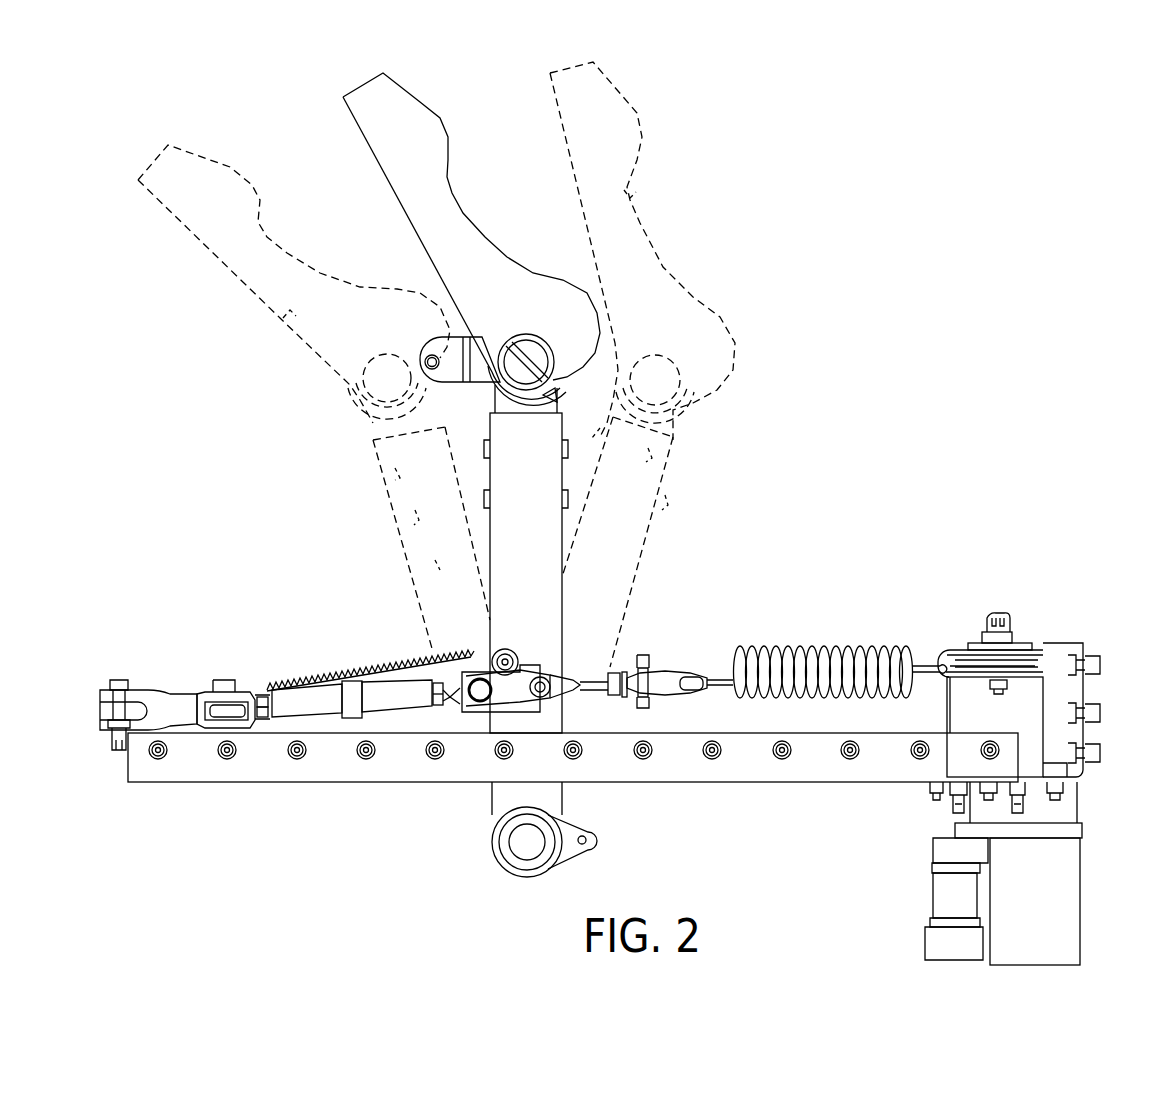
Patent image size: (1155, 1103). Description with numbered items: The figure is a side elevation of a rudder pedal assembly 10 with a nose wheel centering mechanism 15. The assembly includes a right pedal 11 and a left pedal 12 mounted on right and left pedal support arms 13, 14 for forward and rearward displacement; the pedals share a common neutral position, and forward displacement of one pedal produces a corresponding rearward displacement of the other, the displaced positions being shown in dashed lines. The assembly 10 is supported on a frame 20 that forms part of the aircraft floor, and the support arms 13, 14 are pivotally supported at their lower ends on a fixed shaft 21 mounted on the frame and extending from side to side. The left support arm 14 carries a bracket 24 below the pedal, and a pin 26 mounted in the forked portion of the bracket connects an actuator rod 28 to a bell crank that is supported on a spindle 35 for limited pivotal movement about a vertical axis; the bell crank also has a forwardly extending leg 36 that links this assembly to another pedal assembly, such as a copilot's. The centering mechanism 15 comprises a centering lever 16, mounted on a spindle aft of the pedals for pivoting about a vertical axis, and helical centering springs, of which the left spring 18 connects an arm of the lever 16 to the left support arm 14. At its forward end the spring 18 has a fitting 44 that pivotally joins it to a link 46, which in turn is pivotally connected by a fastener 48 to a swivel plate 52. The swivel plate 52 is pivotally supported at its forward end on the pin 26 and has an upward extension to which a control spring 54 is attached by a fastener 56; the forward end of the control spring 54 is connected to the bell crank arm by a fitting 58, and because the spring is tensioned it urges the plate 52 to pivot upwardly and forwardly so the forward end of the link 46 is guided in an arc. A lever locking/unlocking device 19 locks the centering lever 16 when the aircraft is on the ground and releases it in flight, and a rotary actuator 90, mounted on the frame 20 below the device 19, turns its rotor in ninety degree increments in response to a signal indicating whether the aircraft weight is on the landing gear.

The pedal assembly 10 is at (840, 500).
The right pedal 11 is at (292, 330).
The left pedal 12 is at (630, 196).
The right pedal support arm 13 is at (392, 532).
The left pedal support arm 14 is at (562, 546).
The nose wheel centering mechanism 15 is at (1030, 572).
The centering lever 16 is at (1010, 660).
The left helical spring 18 is at (826, 650).
The lever locking/unlocking device 19 is at (958, 701).
The frame 20 is at (750, 770).
The fixed shaft 21 is at (533, 842).
The bracket 24 is at (543, 662).
The pin 26 is at (480, 684).
The actuator rod 28 is at (304, 686).
The spindle 35 is at (222, 690).
The forwardly extending leg 36 is at (180, 695).
The fitting 44 is at (690, 670).
The link 46 is at (594, 692).
The fastener 48 is at (546, 700).
The swivel plate 52 is at (506, 697).
The control spring 54 is at (362, 680).
The fastener 56 is at (504, 660).
The fitting 58 is at (254, 694).
The rotary actuator 90 is at (1082, 858).